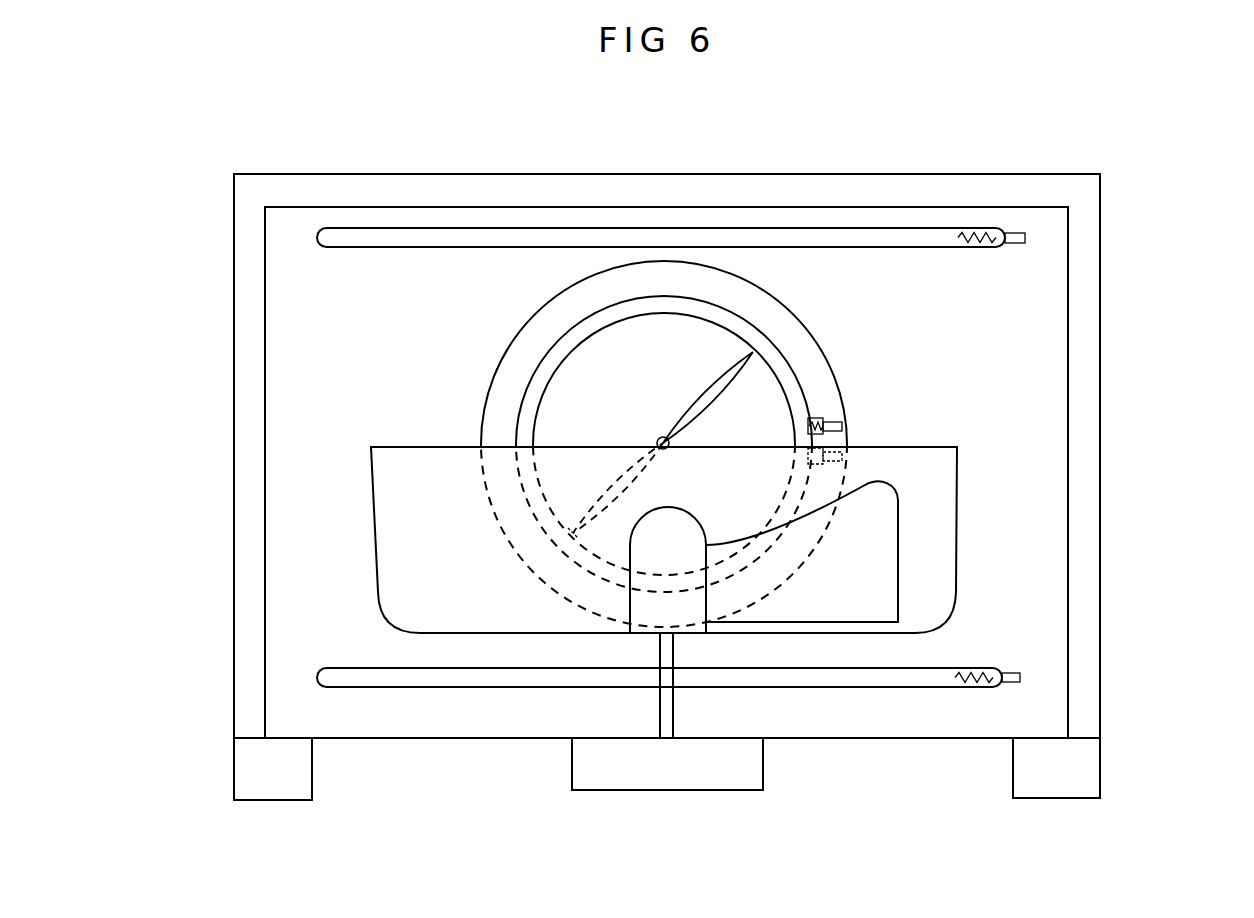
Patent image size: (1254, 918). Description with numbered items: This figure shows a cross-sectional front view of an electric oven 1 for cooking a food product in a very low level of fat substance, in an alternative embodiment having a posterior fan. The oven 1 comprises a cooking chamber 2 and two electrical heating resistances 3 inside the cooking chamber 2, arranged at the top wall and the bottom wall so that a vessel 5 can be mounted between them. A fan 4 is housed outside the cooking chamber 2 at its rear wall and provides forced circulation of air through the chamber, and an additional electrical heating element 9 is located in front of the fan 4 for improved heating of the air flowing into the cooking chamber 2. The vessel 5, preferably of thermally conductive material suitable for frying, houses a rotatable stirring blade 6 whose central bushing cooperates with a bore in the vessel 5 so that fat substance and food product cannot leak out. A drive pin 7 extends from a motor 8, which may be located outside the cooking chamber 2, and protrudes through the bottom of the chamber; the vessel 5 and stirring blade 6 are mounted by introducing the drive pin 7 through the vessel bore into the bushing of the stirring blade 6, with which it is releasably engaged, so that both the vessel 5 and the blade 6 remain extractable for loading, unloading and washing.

The electric oven 1 is at (213, 213).
The cooking chamber 2 is at (302, 376).
The electrical heating resistance 3 is at (460, 227).
The fan 4 is at (737, 392).
The vessel 5 is at (372, 540).
The stirring blade 6 is at (837, 589).
The drive pin 7 is at (655, 712).
The motor 8 is at (665, 796).
The additional electrical heating element 9 is at (733, 300).